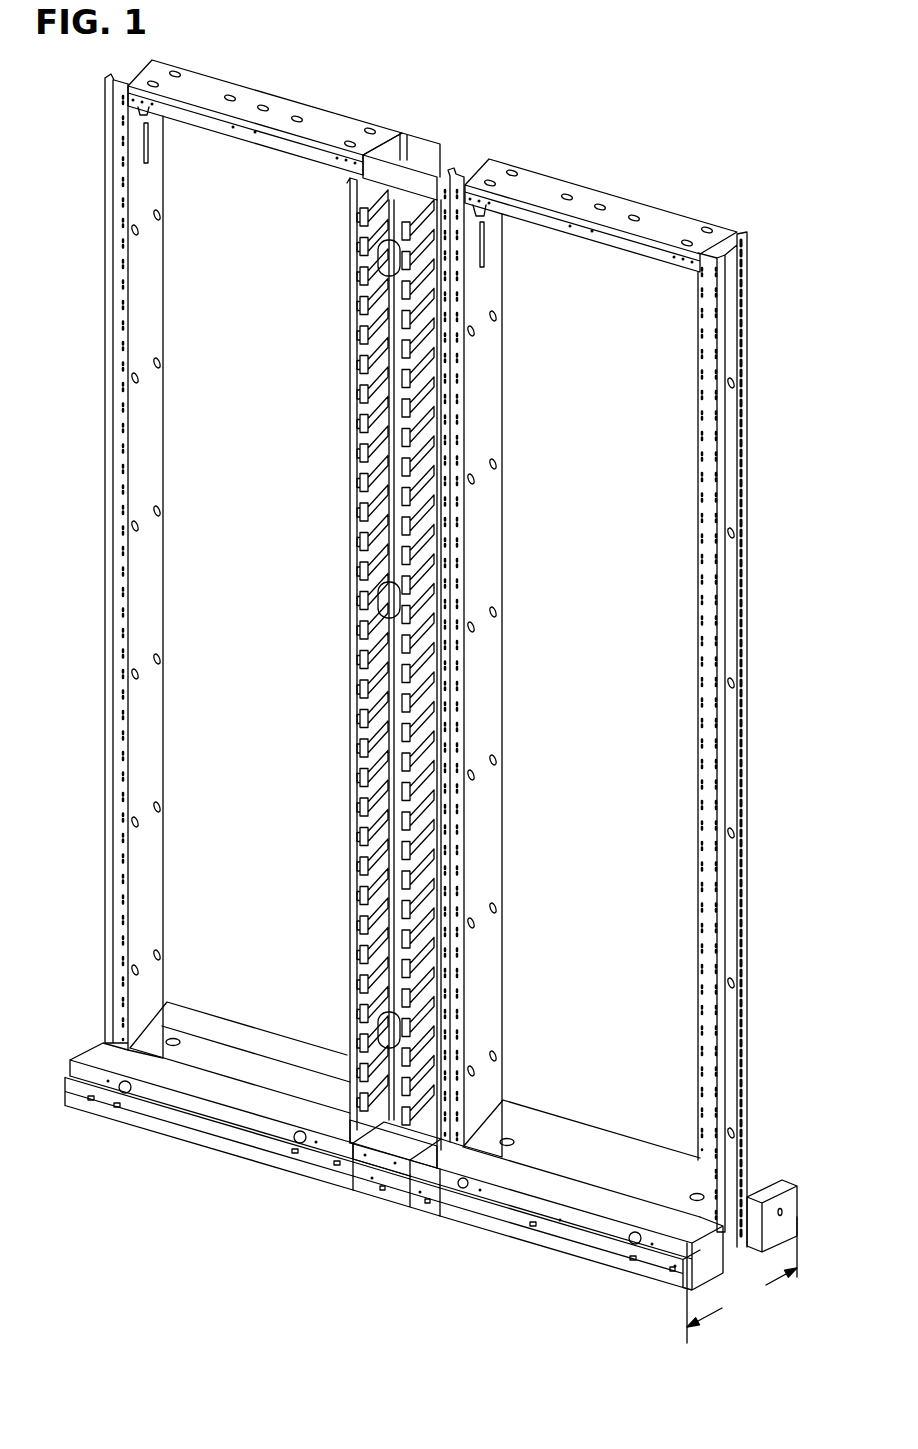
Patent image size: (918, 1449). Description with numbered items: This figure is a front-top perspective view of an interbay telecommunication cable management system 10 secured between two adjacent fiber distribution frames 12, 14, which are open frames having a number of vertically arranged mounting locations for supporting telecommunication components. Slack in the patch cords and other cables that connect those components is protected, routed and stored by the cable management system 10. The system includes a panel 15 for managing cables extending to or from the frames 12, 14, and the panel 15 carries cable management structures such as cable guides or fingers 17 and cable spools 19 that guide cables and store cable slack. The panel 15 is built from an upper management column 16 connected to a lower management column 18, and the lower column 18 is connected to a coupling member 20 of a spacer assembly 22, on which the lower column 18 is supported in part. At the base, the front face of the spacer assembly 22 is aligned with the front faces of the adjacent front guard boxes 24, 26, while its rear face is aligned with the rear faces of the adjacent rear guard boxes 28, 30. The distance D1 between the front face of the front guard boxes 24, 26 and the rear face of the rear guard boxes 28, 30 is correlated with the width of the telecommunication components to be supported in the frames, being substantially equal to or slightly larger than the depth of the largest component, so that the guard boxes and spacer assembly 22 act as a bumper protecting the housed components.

The telecommunication cable management system 10 is at (442, 128).
The fiber distribution frame 12 is at (263, 85).
The fiber distribution frame 14 is at (617, 188).
The panel 15 is at (465, 160).
The upper management column 16 is at (407, 177).
The cable guides or fingers 17 is at (353, 280).
The lower management column 18 is at (395, 767).
The cable spools 19 is at (390, 237).
The coupling member 20 is at (427, 1140).
The spacer assembly 22 is at (370, 1195).
The front guard box 24 is at (547, 1183).
The front guard box 26 is at (191, 1076).
The rear guard box 28 is at (575, 1125).
The rear guard box 30 is at (230, 1027).
The distance D1 is at (742, 1280).